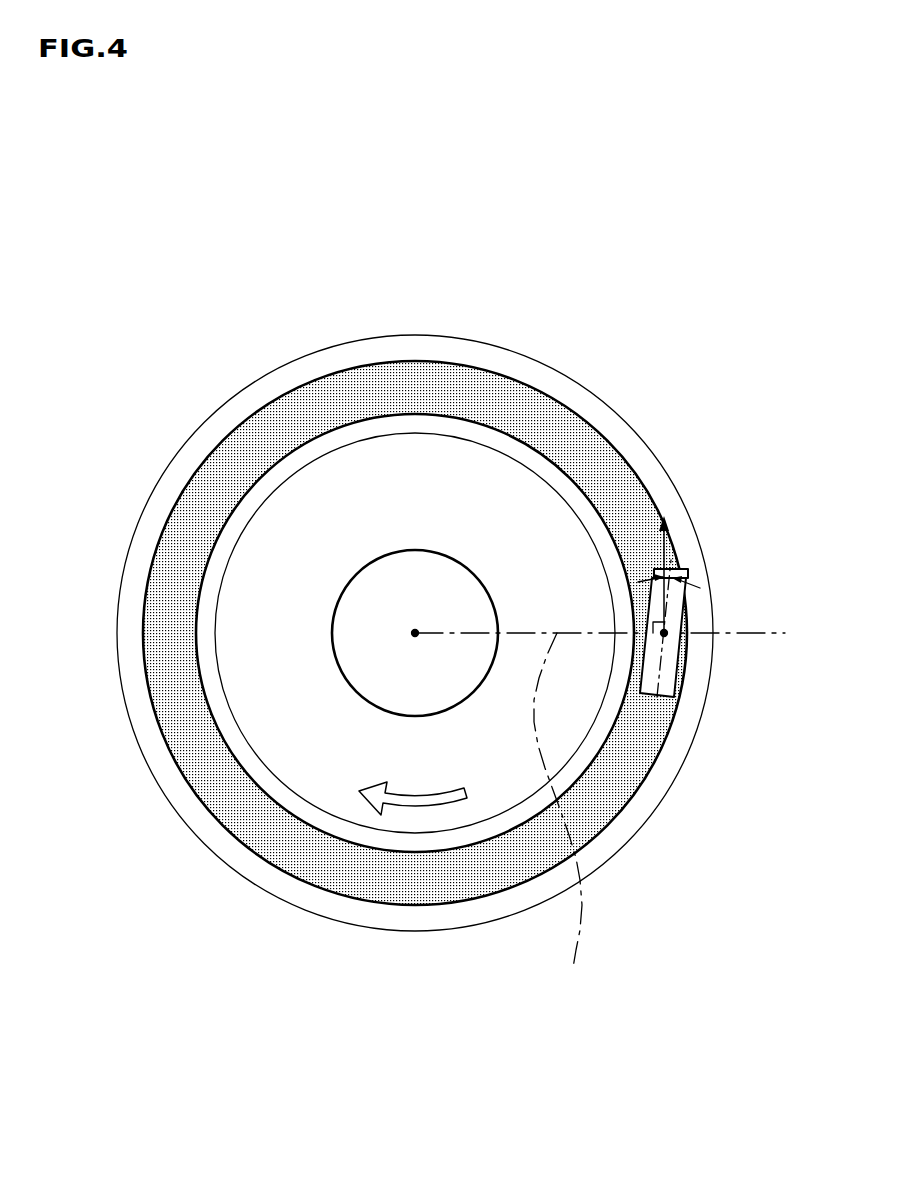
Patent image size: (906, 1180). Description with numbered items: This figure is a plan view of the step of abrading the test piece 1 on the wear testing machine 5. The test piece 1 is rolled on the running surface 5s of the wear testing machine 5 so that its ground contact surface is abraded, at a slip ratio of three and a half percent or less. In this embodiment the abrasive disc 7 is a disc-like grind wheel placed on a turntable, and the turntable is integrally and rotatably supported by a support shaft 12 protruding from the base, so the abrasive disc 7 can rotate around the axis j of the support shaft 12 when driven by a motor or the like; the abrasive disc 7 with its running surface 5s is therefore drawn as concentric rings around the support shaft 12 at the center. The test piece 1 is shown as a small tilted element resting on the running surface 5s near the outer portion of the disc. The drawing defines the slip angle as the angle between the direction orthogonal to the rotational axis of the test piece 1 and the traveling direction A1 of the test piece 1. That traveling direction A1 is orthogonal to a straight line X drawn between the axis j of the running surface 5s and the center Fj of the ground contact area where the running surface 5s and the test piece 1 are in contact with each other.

The wear testing machine 5 is at (618, 322).
The abrasive disc 7 is at (283, 427).
The running surface 5s is at (177, 567).
The support shaft 12 is at (420, 585).
The test piece 1 is at (683, 688).
The traveling direction A1 is at (668, 545).
The center of the ground contact area Fj is at (664, 633).
The axis j is at (415, 633).
The straight line X is at (558, 815).